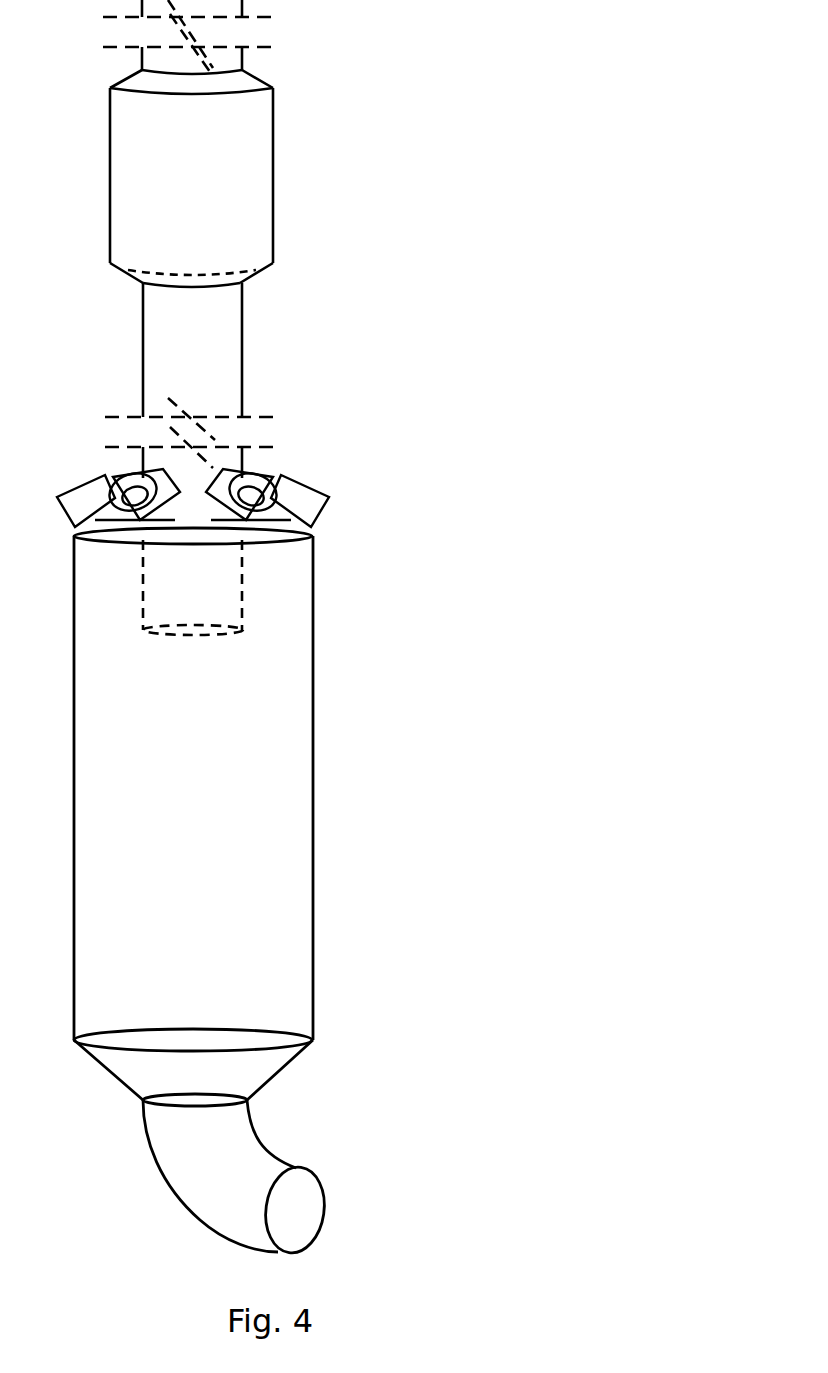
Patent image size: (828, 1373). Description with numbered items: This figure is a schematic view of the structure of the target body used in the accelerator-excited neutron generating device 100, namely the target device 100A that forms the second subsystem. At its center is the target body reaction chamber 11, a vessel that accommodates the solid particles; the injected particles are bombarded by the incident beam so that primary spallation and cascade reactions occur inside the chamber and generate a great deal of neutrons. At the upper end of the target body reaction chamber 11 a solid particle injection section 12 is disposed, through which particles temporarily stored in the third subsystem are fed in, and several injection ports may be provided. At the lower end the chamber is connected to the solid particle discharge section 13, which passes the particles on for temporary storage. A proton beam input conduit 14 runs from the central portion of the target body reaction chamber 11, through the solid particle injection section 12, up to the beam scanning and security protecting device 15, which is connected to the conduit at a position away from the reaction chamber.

The accelerator-excited neutron generating device 100 is at (477, 323).
The target device 100A is at (448, 693).
The target body reaction chamber 11 is at (295, 833).
The solid particle injection section 12 is at (295, 495).
The solid particle discharge section 13 is at (245, 1150).
The proton beam input conduit 14 is at (225, 602).
The beam scanning and security protecting device 15 is at (257, 177).